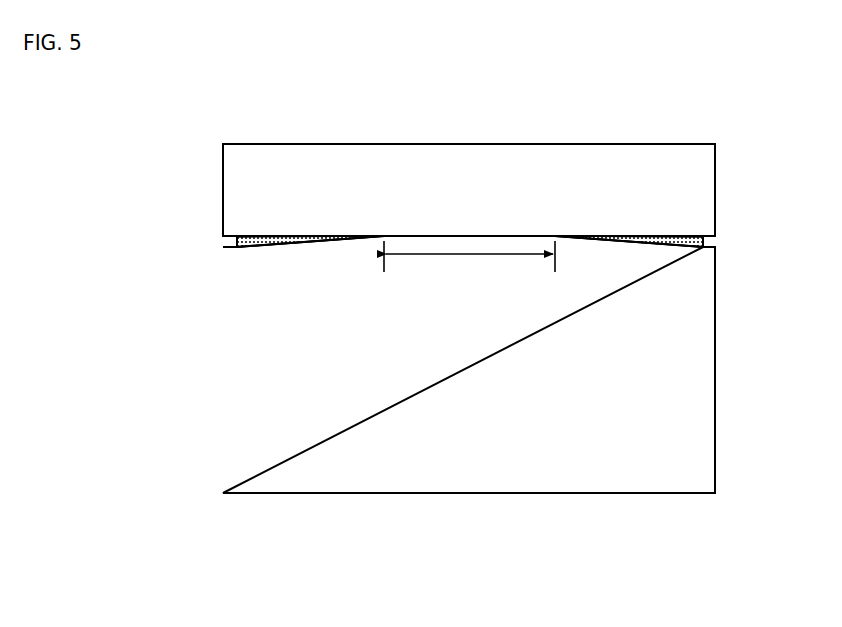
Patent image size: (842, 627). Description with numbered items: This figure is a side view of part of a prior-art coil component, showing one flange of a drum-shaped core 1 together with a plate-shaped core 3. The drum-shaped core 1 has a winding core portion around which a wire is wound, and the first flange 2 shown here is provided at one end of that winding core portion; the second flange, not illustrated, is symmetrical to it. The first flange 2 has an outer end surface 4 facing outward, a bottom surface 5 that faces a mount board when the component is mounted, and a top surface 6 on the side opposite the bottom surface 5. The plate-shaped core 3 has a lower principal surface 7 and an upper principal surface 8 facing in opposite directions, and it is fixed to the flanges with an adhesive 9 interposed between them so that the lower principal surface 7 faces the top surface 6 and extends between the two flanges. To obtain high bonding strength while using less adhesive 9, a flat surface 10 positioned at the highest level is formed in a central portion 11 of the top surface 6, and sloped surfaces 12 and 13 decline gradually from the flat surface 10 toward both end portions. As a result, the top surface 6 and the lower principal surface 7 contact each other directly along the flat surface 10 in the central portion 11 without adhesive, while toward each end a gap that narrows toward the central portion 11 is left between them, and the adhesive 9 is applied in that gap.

The drum-shaped core 1 is at (463, 319).
The first flange 2 is at (222, 392).
The plate-shaped core 3 is at (220, 180).
The outer end surface 4 is at (688, 353).
The bottom surface 5 is at (437, 493).
The top surface 6 is at (655, 240).
The lower principal surface 7 is at (296, 248).
The upper principal surface 8 is at (405, 144).
The adhesive 9 is at (703, 240).
The flat surface 10 is at (437, 236).
The central portion 11 is at (452, 257).
The sloped surface 12 is at (270, 245).
The sloped surface 13 is at (690, 240).